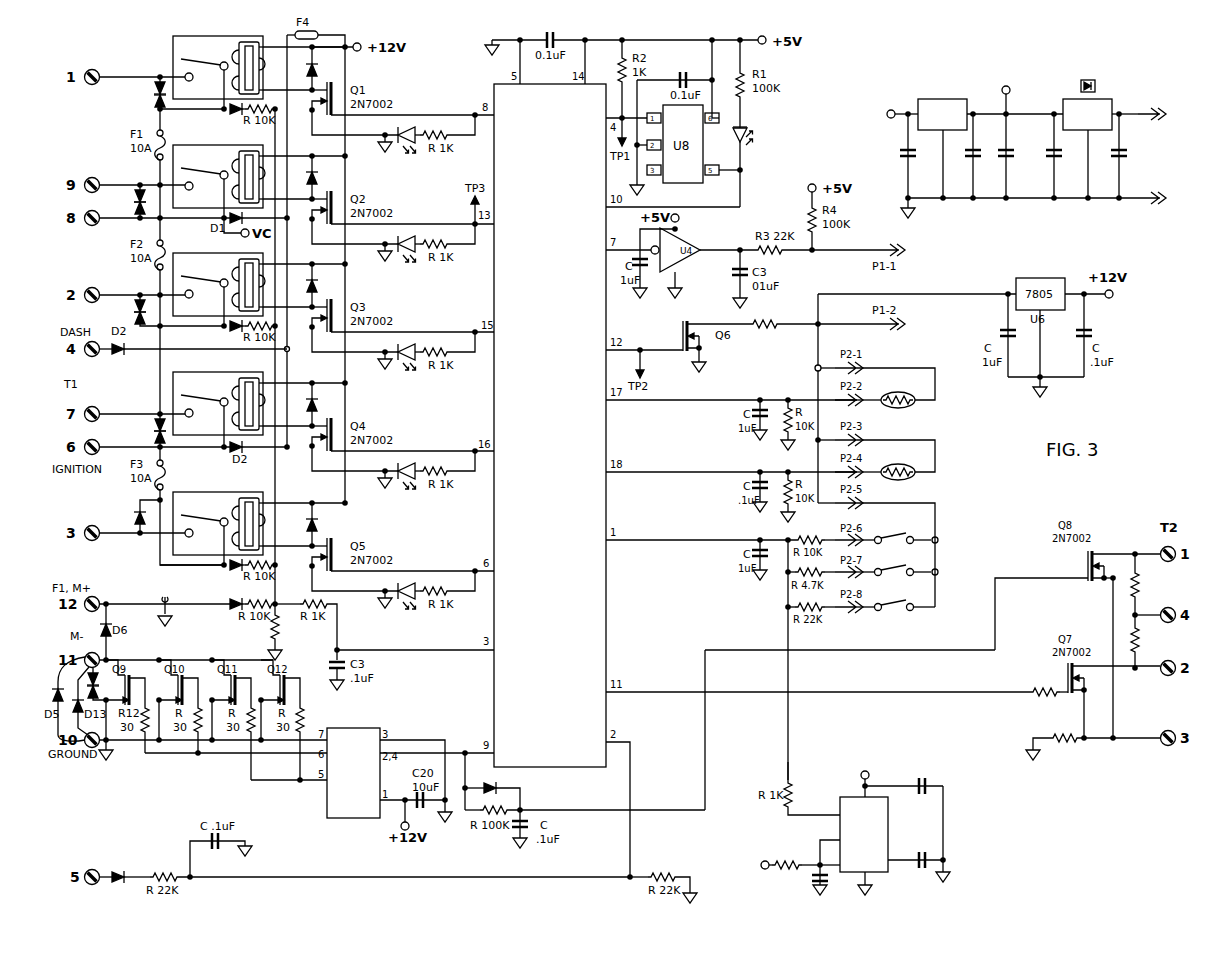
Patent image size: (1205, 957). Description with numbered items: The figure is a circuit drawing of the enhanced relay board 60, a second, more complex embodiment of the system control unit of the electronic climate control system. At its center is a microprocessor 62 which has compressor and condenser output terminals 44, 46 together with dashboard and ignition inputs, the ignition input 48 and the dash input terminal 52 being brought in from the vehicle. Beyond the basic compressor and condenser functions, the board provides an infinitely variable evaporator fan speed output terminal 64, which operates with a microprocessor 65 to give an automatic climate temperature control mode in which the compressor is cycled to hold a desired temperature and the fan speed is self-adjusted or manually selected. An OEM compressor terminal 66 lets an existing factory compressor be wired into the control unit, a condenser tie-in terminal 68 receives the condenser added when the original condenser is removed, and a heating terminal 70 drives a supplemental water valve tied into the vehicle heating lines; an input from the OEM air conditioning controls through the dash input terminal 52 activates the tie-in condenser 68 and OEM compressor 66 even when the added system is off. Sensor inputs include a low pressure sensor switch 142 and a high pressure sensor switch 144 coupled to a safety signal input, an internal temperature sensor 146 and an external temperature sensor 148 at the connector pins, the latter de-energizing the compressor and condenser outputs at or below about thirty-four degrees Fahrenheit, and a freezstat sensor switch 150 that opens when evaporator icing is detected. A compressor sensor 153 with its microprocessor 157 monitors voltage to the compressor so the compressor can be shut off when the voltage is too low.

The compressor relay 44 is at (173, 52).
The condenser relay 46 is at (205, 145).
The ignition input terminal 48 is at (86, 872).
The dash input terminal 52 is at (86, 351).
The enhanced relay board 60 is at (819, 92).
The microprocessor 62 is at (557, 412).
The infinitely variable evaporator fan speed output terminal 64 is at (97, 598).
The microprocessor 65 is at (357, 728).
The OEM compressor terminal 66 is at (220, 306).
The condenser tie-in terminal 68 is at (218, 426).
The heating terminal 70 is at (214, 546).
The low pressure sensor switch 142 is at (912, 536).
The high pressure sensor switch 144 is at (912, 568).
The internal temperature sensor 146 is at (912, 406).
The external temperature sensor 148 is at (912, 478).
The freezstat sensor switch 150 is at (922, 612).
The compressor sensor 153 is at (897, 748).
The microprocessor 157 is at (840, 797).